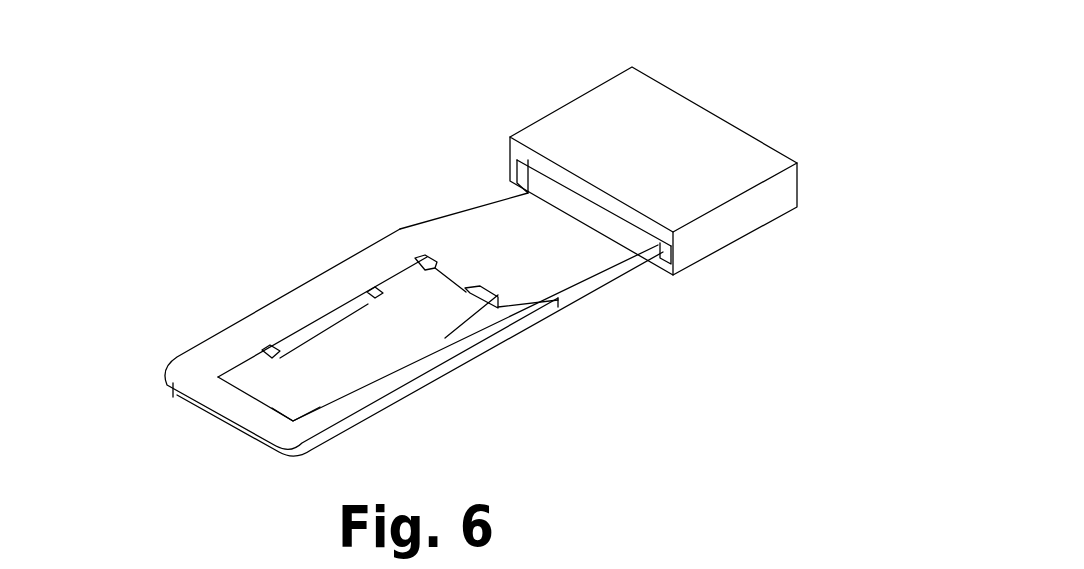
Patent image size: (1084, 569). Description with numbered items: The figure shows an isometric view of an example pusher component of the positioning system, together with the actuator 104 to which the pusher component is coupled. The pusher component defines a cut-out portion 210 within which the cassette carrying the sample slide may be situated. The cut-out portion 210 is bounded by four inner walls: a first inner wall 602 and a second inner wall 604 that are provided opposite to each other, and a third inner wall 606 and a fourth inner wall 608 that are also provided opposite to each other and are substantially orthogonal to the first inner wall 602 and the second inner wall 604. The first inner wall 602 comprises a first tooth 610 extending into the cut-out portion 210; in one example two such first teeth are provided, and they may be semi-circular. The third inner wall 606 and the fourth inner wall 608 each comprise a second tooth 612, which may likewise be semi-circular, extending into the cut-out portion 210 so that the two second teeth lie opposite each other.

The actuator 104 is at (667, 133).
The cut-out portion 210 is at (423, 307).
The first inner wall 602 is at (400, 273).
The second inner wall 604 is at (383, 377).
The third inner wall 606 is at (497, 297).
The fourth inner wall 608 is at (292, 421).
The first tooth 610 is at (378, 293).
The second tooth 612 is at (257, 397).